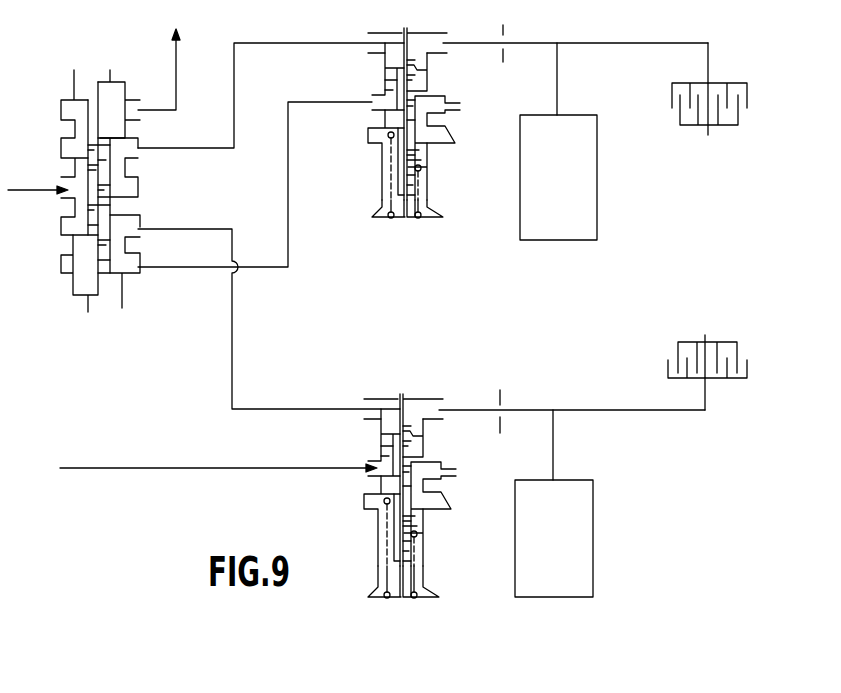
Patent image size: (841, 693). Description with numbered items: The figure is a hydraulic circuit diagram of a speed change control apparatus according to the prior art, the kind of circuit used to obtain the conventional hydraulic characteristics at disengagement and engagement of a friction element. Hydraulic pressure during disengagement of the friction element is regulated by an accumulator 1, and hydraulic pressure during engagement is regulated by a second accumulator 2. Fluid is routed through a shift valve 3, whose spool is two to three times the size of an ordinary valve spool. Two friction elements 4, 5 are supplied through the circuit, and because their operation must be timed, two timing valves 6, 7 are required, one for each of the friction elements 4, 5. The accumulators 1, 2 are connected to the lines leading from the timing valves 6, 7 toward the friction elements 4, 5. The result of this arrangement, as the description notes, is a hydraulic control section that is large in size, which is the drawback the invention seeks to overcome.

The accumulator 1 is at (597, 182).
The accumulator 2 is at (593, 557).
The shift valve 3 is at (67, 100).
The friction element 4 is at (748, 94).
The friction element 5 is at (747, 370).
The timing valve 6 is at (383, 163).
The timing valve 7 is at (383, 538).